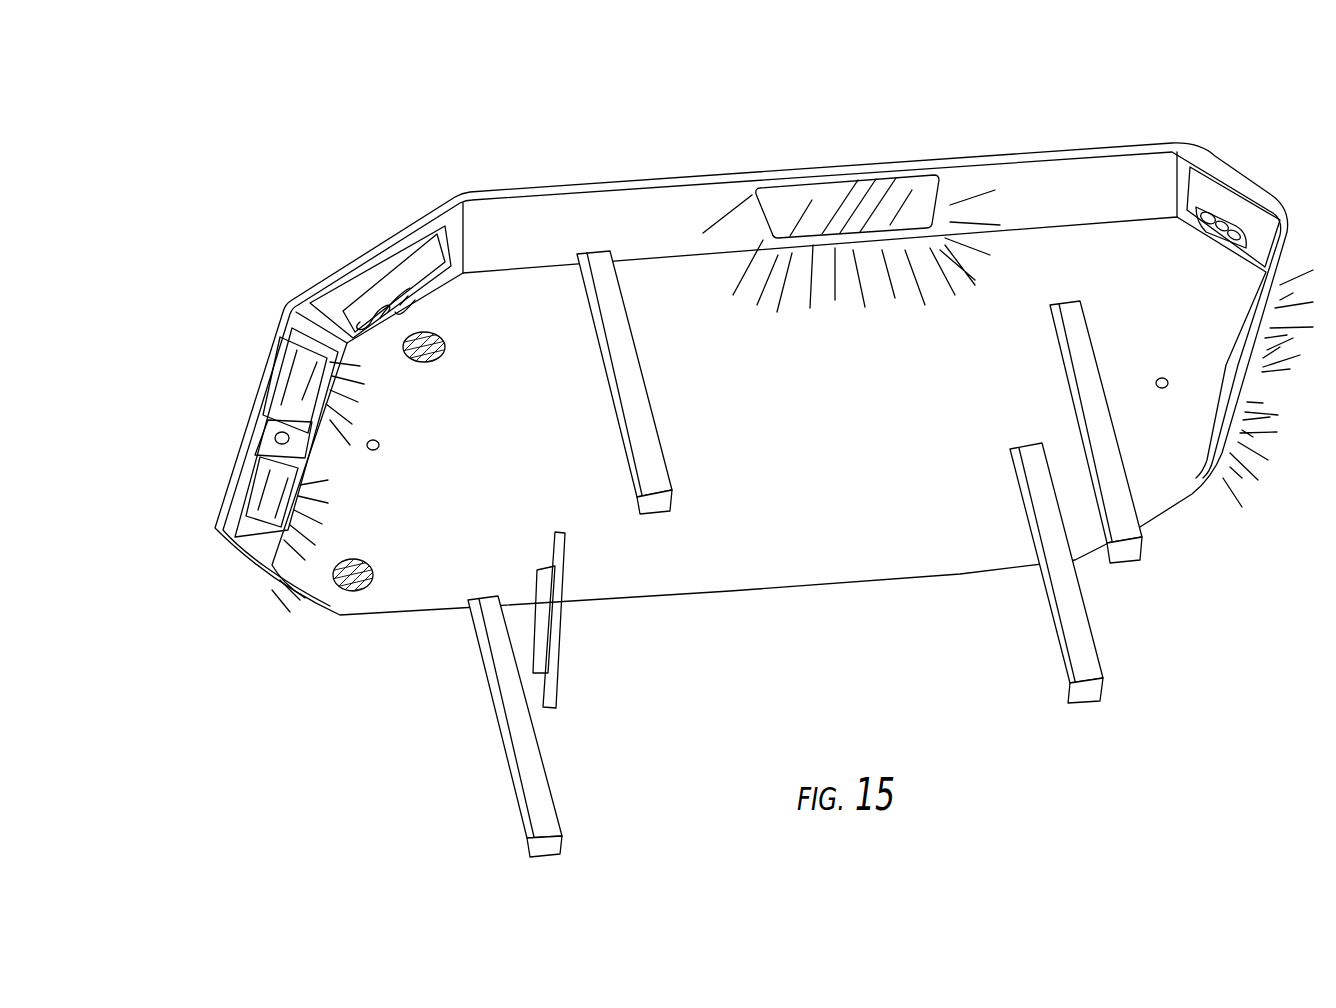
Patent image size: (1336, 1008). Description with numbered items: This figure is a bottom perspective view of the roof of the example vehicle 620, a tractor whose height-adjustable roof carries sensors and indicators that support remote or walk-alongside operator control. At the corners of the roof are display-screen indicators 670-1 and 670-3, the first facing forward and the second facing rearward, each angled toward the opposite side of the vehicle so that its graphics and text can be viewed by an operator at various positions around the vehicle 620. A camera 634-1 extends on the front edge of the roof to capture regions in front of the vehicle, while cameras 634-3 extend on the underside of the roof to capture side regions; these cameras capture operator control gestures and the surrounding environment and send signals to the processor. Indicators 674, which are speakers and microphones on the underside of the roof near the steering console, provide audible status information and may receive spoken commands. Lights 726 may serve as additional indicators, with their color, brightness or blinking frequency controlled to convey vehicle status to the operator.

The vehicle 620 is at (596, 112).
The lights 726 is at (817, 186).
The indicator 670-1 is at (388, 283).
The indicator 670-3 is at (1215, 215).
The camera 634-1 is at (273, 432).
The camera 634-3 is at (378, 449).
The indicator 674 is at (428, 362).